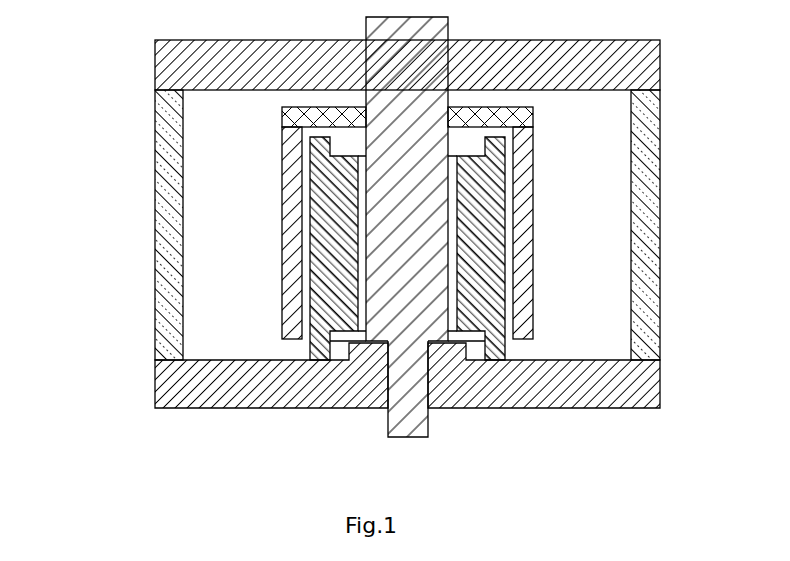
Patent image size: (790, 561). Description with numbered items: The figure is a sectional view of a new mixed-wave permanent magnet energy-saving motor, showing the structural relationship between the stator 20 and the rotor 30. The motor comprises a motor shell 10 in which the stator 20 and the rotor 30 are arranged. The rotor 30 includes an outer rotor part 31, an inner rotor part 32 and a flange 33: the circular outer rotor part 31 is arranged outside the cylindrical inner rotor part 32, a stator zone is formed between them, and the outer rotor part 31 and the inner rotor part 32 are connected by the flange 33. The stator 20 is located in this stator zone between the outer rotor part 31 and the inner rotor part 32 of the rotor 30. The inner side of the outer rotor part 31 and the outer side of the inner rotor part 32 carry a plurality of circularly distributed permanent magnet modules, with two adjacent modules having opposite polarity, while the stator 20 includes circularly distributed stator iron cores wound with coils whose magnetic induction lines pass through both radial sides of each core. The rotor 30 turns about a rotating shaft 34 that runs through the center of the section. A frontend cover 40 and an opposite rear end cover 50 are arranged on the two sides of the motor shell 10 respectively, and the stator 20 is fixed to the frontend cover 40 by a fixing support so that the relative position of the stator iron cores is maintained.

The motor shell 10 is at (167, 230).
The stator 20 is at (337, 293).
The rotor 30 is at (525, 257).
The outer rotor part 31 is at (293, 186).
The inner rotor part 32 is at (427, 163).
The flange 33 is at (322, 118).
The rotating shaft 34 is at (407, 412).
The frontend cover 40 is at (497, 393).
The rear end cover 50 is at (582, 55).